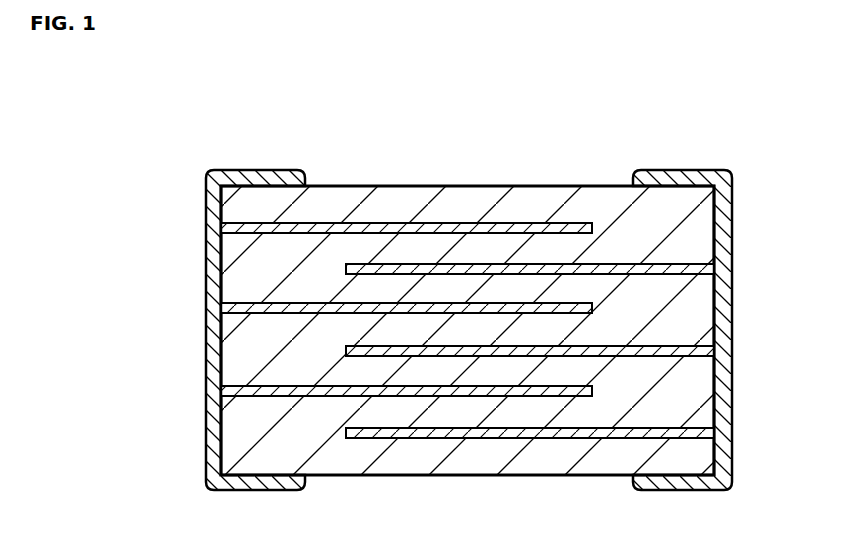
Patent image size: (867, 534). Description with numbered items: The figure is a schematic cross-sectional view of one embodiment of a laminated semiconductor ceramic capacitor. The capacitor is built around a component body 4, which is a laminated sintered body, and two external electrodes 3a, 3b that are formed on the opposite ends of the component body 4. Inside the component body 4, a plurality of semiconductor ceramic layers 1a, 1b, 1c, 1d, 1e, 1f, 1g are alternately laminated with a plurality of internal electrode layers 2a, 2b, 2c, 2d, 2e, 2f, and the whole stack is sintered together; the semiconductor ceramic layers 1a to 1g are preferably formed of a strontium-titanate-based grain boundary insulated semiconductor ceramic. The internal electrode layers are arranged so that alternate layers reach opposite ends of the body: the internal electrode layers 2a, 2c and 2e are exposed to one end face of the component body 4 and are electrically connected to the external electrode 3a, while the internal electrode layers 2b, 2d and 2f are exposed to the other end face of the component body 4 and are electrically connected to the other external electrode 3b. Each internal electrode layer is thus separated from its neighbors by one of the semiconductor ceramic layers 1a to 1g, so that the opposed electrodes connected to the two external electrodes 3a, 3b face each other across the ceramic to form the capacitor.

The semiconductor ceramic layer 1a is at (248, 207).
The semiconductor ceramic layer 1b is at (245, 248).
The semiconductor ceramic layer 1c is at (245, 285).
The semiconductor ceramic layer 1d is at (247, 326).
The semiconductor ceramic layer 1e is at (250, 371).
The semiconductor ceramic layer 1f is at (240, 414).
The semiconductor ceramic layer 1g is at (236, 456).
The internal electrode layer 2a is at (592, 229).
The internal electrode layer 2b is at (714, 268).
The internal electrode layer 2c is at (592, 308).
The internal electrode layer 2d is at (714, 351).
The internal electrode layer 2e is at (592, 391).
The internal electrode layer 2f is at (714, 433).
The external electrode 3a is at (240, 168).
The external electrode 3b is at (728, 208).
The component body 4 is at (502, 186).